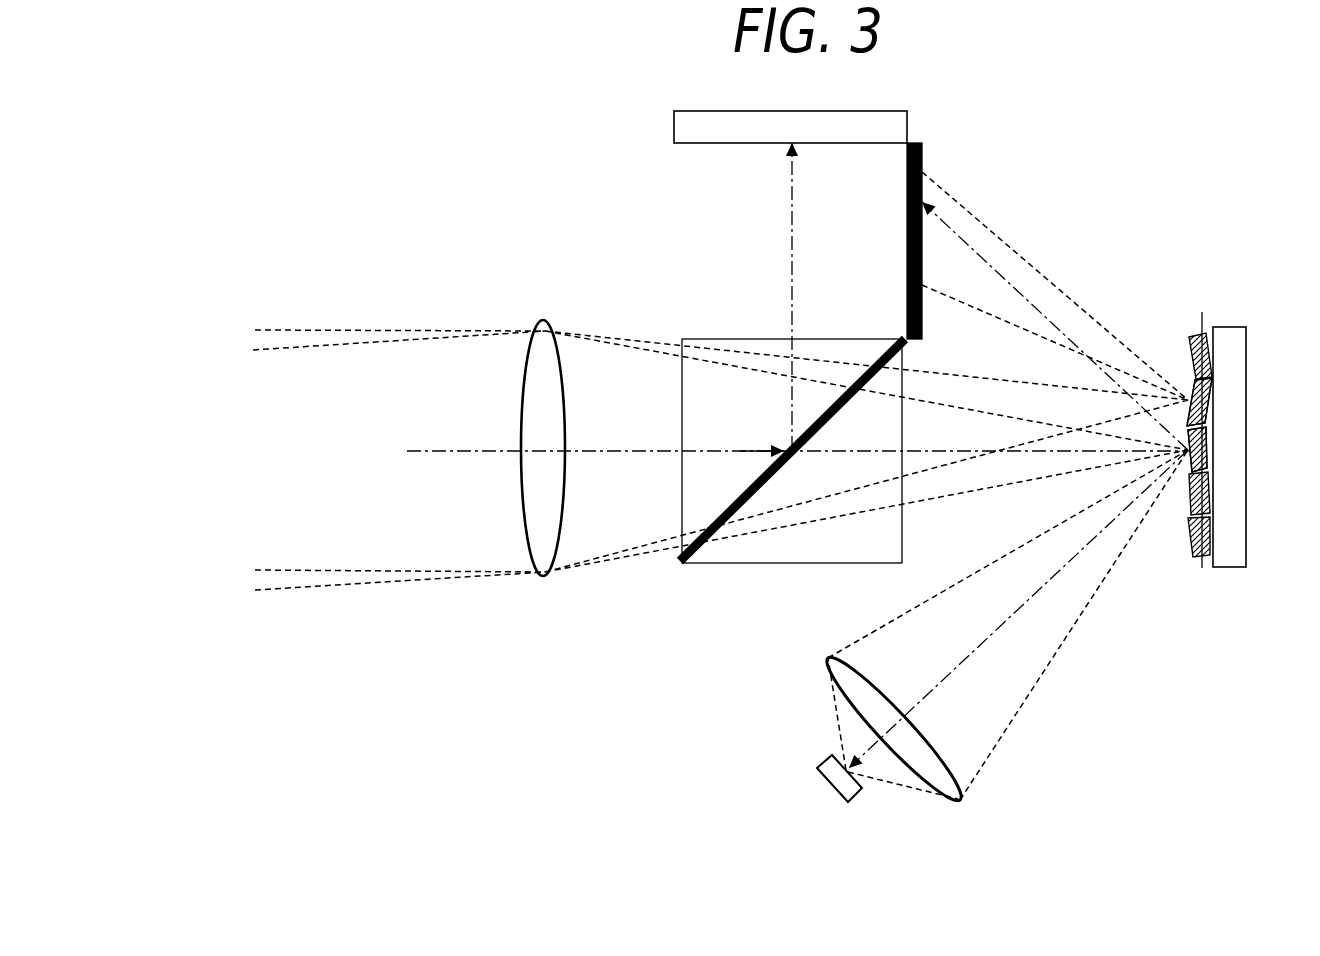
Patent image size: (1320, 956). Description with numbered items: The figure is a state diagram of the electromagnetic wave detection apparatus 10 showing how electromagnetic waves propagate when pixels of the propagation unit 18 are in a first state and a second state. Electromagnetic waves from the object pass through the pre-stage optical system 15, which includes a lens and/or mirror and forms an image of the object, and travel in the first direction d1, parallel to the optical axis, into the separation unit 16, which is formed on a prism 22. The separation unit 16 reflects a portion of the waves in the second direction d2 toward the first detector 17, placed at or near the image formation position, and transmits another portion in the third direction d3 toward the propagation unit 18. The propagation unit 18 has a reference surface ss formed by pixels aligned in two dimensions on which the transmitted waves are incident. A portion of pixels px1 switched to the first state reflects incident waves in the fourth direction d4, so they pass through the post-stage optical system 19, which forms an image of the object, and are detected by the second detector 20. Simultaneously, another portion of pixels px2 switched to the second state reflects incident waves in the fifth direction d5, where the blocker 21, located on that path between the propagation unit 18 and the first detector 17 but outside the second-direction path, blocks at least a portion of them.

The electromagnetic wave detection apparatus 10 is at (462, 754).
The pre-stage optical system 15 is at (543, 320).
The separation unit 16 is at (681, 562).
The first detector 17 is at (674, 120).
The propagation unit 18 is at (1248, 490).
The post-stage optical system 19 is at (955, 806).
The second detector 20 is at (842, 803).
The blocker 21 is at (922, 150).
The prism 22 is at (709, 405).
The first direction d1 is at (622, 453).
The second direction d2 is at (793, 248).
The third direction d3 is at (1012, 453).
The fourth direction d4 is at (1000, 629).
The fifth direction d5 is at (996, 273).
The pixels in the first state px1 is at (1210, 443).
The pixels in the second state px2 is at (1212, 400).
The reference surface ss is at (1202, 320).